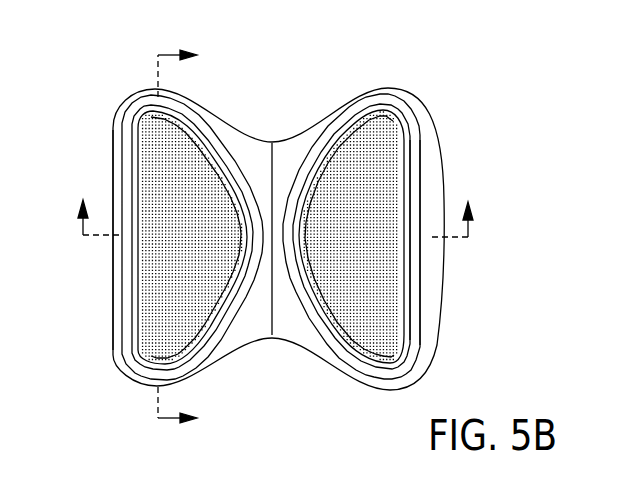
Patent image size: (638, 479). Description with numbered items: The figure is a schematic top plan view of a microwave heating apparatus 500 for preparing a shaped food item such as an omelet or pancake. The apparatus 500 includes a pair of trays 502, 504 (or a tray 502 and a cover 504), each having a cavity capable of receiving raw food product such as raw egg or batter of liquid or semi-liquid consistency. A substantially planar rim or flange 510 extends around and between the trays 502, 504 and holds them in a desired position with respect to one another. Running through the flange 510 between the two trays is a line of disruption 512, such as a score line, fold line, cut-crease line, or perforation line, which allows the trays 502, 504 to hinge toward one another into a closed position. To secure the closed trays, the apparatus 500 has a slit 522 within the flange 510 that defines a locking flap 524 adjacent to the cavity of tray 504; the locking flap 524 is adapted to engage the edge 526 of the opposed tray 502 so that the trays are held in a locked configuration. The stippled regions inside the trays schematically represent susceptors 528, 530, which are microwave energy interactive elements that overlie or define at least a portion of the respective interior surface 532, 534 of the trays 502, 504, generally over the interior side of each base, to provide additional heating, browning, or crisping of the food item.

The microwave heating apparatus 500 is at (271, 239).
The tray 502 is at (212, 89).
The tray 504 is at (325, 90).
The flange 510 is at (438, 310).
The line of disruption 512 is at (272, 323).
The slit 522 is at (433, 255).
The locking flap 524 is at (431, 248).
The edge 526 is at (113, 265).
The susceptor 528 is at (150, 135).
The susceptor 530 is at (390, 130).
The interior surface 532 is at (208, 246).
The interior surface 534 is at (371, 246).